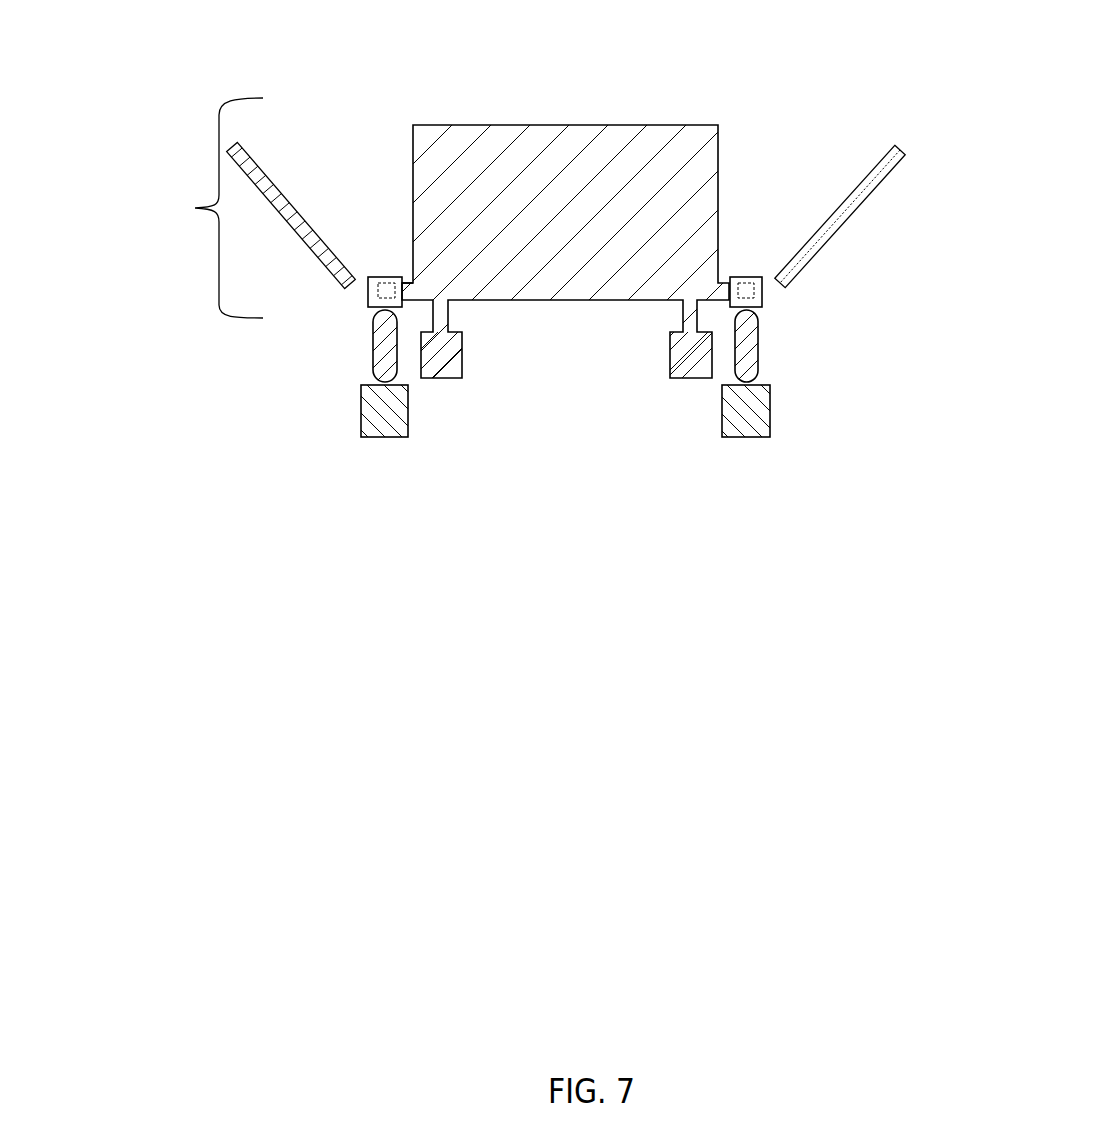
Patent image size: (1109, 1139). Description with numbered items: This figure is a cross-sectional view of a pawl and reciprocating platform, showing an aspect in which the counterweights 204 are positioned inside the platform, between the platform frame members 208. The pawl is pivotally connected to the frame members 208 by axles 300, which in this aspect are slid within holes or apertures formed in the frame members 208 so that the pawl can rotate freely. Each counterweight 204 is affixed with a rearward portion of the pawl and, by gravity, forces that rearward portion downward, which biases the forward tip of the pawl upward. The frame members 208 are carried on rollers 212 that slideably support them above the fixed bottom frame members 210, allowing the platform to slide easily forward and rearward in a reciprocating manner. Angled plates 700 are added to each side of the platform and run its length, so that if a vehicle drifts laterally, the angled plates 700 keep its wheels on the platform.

The angled plate 700 is at (300, 217).
The platform frame member 208 is at (392, 277).
The axle 300 is at (402, 290).
The roller 212 is at (378, 355).
The bottom frame member 210 is at (365, 423).
The counterweight 204 is at (442, 348).